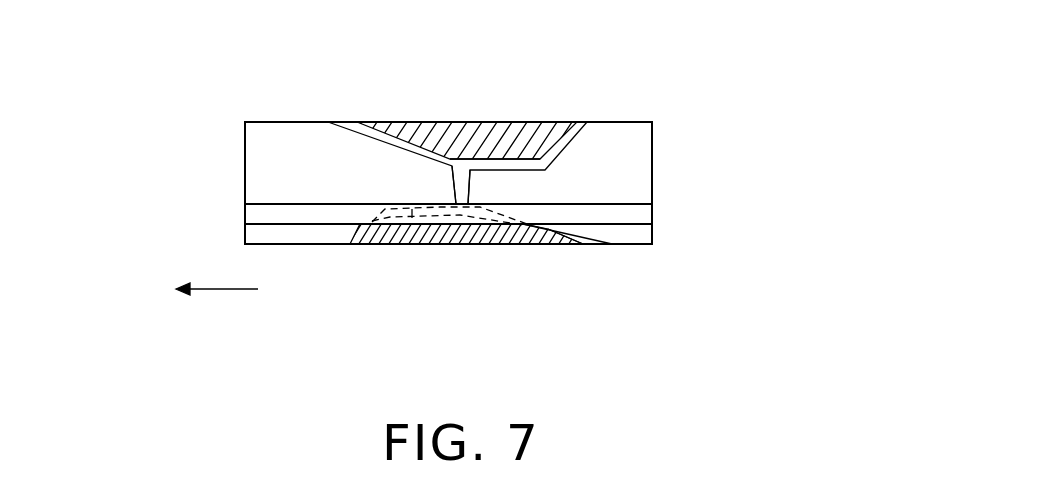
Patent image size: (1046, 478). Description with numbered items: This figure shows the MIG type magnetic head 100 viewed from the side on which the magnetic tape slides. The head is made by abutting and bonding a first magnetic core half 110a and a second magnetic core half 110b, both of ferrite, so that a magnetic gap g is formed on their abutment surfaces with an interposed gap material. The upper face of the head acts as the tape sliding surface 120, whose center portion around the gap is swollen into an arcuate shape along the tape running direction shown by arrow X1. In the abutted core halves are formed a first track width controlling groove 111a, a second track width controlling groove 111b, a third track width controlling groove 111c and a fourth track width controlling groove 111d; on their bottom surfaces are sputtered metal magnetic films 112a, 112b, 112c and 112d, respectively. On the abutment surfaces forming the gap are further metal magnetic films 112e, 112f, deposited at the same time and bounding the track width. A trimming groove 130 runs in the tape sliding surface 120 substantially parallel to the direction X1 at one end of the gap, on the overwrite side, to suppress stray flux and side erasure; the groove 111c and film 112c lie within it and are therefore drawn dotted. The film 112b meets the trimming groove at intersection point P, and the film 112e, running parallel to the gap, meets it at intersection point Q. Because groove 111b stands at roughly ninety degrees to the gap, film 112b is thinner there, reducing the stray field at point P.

The magnetic head 100 is at (708, 83).
The first magnetic core half 110a is at (637, 150).
The second magnetic core half 110b is at (263, 157).
The first track width controlling groove 111a is at (531, 158).
The second track width controlling groove 111b is at (580, 248).
The third track width controlling groove 111c is at (410, 248).
The fourth track width controlling groove 111d is at (423, 130).
The metal magnetic film 112a is at (507, 166).
The metal magnetic film 112b is at (558, 245).
The metal magnetic film 112c is at (366, 243).
The metal magnetic film 112d is at (386, 138).
The metal magnetic film 112e is at (470, 190).
The metal magnetic film 112f is at (452, 190).
The tape sliding surface 120 is at (262, 137).
The trimming groove 130 is at (640, 212).
The magnetic gap g is at (445, 150).
The point of intersection P is at (522, 248).
The point of intersection Q is at (460, 245).
The arrow indicating tape running direction X1 is at (197, 292).